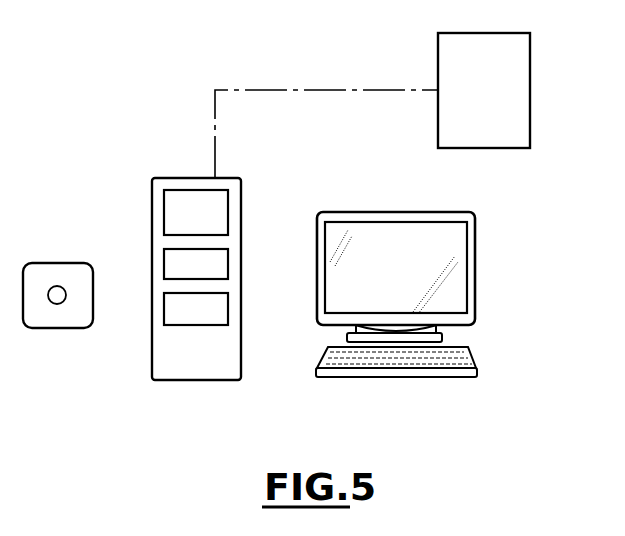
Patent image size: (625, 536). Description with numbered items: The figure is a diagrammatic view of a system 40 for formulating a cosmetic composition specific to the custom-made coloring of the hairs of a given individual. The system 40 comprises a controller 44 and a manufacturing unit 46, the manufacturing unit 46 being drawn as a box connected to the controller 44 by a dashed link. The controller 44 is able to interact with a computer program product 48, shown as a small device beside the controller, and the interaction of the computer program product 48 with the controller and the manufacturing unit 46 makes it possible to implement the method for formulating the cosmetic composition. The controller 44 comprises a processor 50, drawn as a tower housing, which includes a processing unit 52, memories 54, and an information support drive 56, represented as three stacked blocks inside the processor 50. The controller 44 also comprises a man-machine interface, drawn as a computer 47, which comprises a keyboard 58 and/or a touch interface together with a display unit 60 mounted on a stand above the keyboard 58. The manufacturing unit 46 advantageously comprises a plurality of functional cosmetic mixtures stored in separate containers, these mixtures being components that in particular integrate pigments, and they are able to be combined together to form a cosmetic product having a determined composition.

The system 40 is at (105, 378).
The controller 44 is at (310, 180).
The manufacturing unit 46 is at (512, 82).
The user interface computer 47 is at (461, 294).
The computer program product 48 is at (80, 298).
The processor 50 is at (224, 350).
The processing unit 52 is at (220, 305).
The memories 54 is at (218, 262).
The information support drive 56 is at (217, 217).
The keyboard 58 is at (425, 358).
The display unit 60 is at (450, 285).